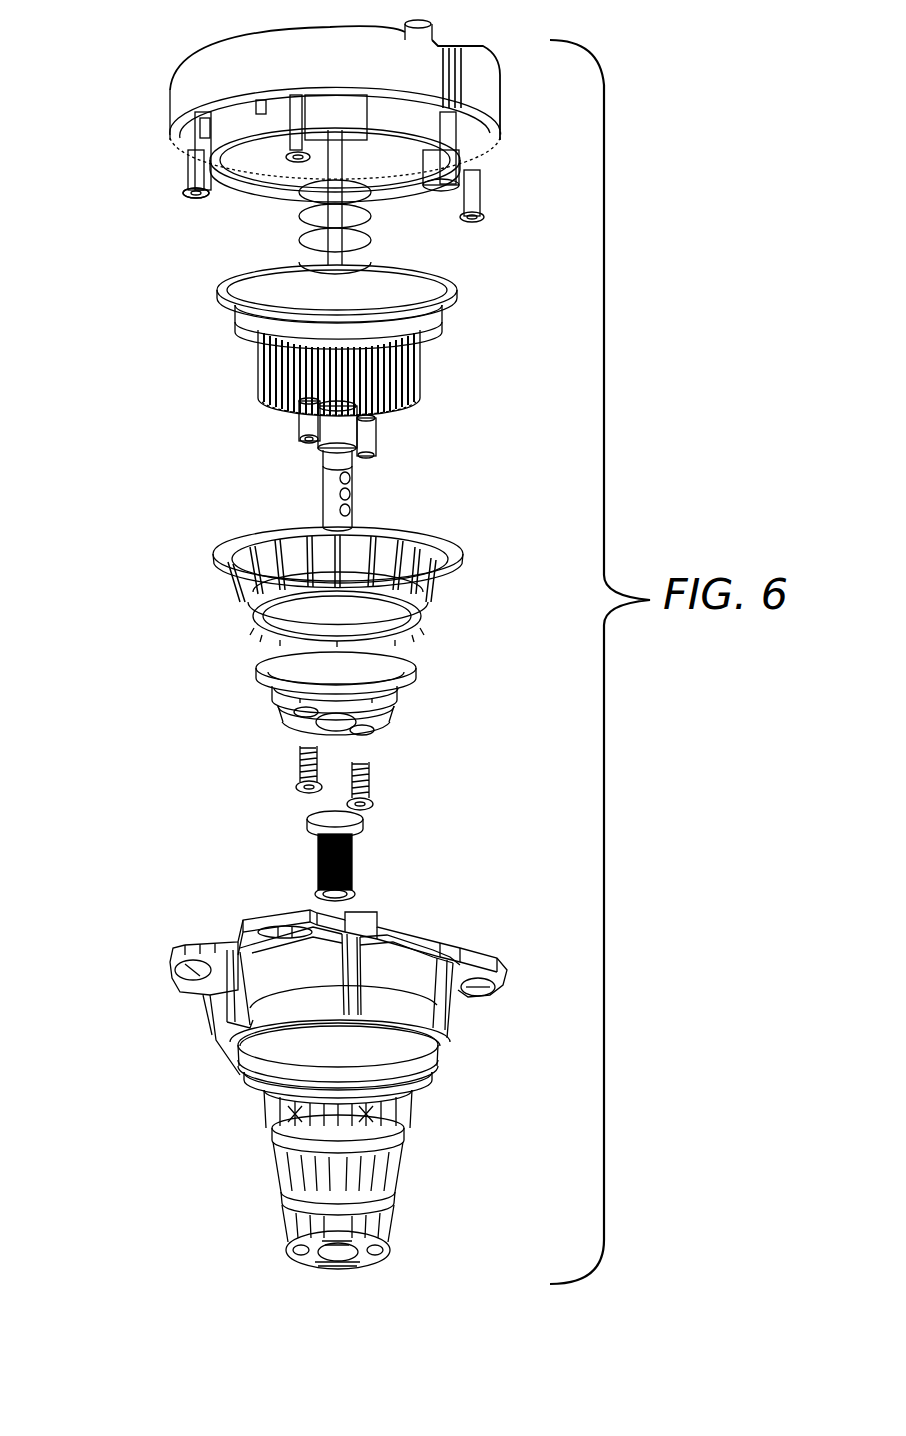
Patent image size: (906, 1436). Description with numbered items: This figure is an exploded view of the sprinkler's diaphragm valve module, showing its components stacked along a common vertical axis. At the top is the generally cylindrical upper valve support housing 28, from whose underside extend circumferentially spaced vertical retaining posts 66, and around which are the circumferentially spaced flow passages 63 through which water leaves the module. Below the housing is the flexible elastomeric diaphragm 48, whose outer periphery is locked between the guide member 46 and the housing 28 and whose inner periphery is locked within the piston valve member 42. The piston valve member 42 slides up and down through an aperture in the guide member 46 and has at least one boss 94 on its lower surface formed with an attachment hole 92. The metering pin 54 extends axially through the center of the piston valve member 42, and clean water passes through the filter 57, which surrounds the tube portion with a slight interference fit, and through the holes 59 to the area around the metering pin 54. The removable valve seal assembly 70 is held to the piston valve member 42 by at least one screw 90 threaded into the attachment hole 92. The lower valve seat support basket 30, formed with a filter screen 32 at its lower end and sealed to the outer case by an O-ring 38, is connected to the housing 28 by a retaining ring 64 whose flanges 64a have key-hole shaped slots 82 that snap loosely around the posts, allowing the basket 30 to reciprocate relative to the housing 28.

The upper valve support housing 28 is at (182, 82).
The retaining posts 66 is at (185, 194).
The flow passages 63 is at (262, 110).
The diaphragm 48 is at (247, 318).
The piston valve member 42 is at (421, 375).
The boss 94 is at (303, 412).
The attachment hole 92 is at (304, 440).
The metering pin 54 is at (323, 494).
The holes 59 is at (353, 493).
The guide member 46 is at (216, 582).
The valve seal assembly 70 is at (215, 729).
The screw 90 is at (372, 786).
The filter 57 is at (352, 862).
The retaining ring 64 is at (418, 937).
The flanges 64a is at (176, 959).
The key-hole shaped slots 82 is at (479, 998).
The filter screen 32 is at (130, 1064).
The O-ring 38 is at (242, 1082).
The valve seat support basket 30 is at (396, 1168).